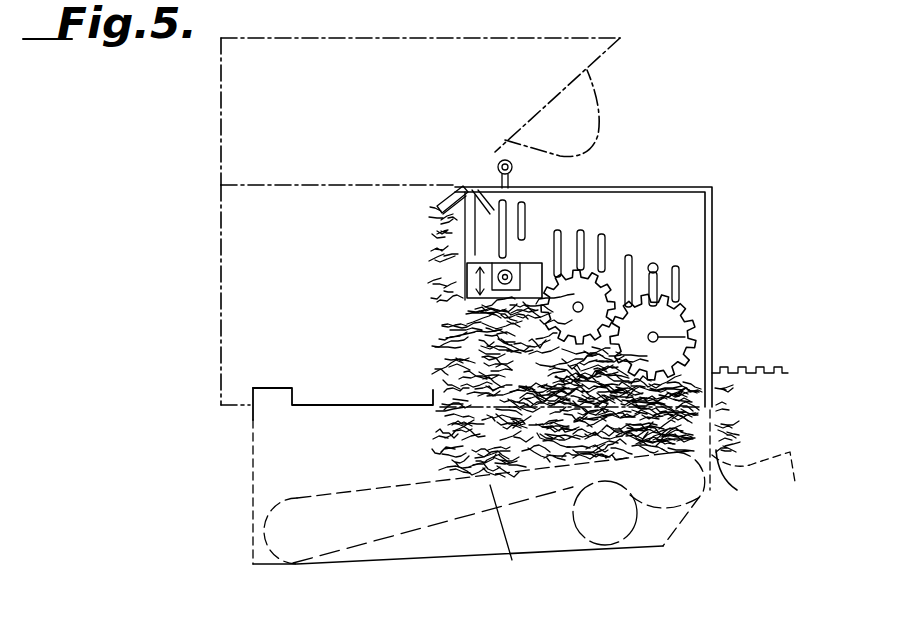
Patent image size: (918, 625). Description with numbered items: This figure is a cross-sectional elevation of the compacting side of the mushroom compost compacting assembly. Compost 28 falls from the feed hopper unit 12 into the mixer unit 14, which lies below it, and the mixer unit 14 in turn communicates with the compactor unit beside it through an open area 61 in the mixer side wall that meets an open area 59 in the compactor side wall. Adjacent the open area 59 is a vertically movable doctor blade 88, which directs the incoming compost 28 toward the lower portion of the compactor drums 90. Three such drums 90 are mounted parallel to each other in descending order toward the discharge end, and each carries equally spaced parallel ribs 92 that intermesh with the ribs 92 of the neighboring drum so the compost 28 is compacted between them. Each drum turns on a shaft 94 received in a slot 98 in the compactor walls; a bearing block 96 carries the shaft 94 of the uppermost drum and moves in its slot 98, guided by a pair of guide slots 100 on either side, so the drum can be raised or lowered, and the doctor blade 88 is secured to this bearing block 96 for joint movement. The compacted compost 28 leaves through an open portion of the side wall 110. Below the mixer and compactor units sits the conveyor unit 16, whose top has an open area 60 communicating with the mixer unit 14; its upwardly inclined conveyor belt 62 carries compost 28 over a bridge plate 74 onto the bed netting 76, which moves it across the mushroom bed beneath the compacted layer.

The feed hopper unit 12 is at (258, 125).
The mixer unit 14 is at (250, 296).
The conveyor unit 16 is at (285, 470).
The compost 28 is at (455, 362).
The open area in side wall of compactor unit 59 is at (452, 292).
The open area of top of conveyor unit 60 is at (357, 405).
The open area in side wall of mixer unit 61 is at (428, 285).
The conveyor belt 62 is at (496, 488).
The bridge plate 74 is at (733, 482).
The bed netting 76 is at (792, 478).
The doctor blade 88 is at (450, 262).
The compactor drum 90 is at (598, 293).
The ribs 92 is at (676, 291).
The shaft 94 is at (513, 206).
The bearing block 96 is at (460, 320).
The slot 98 is at (582, 204).
The guide slot 100 is at (487, 182).
The side wall of compactor unit 110 is at (712, 224).